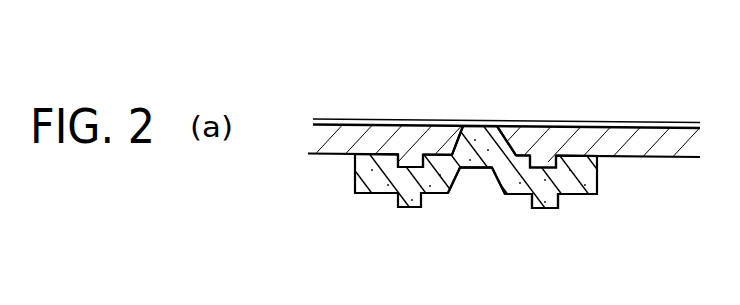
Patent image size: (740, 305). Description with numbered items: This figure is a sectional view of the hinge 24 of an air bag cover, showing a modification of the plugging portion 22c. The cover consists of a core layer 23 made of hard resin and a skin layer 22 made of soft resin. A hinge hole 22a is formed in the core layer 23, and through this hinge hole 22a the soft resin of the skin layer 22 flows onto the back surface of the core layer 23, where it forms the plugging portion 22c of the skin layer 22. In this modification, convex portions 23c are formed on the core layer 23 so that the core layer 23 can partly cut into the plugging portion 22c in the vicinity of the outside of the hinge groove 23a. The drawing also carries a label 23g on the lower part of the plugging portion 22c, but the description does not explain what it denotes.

The skin layer 22 is at (665, 121).
The hinge hole 22a is at (478, 126).
The plugging portion 22c is at (583, 178).
The core layer 23 is at (670, 148).
The hinge groove 23a is at (475, 173).
The convex portions 23c is at (415, 163).
The groove 23g is at (532, 203).
The hinge 24 is at (480, 199).